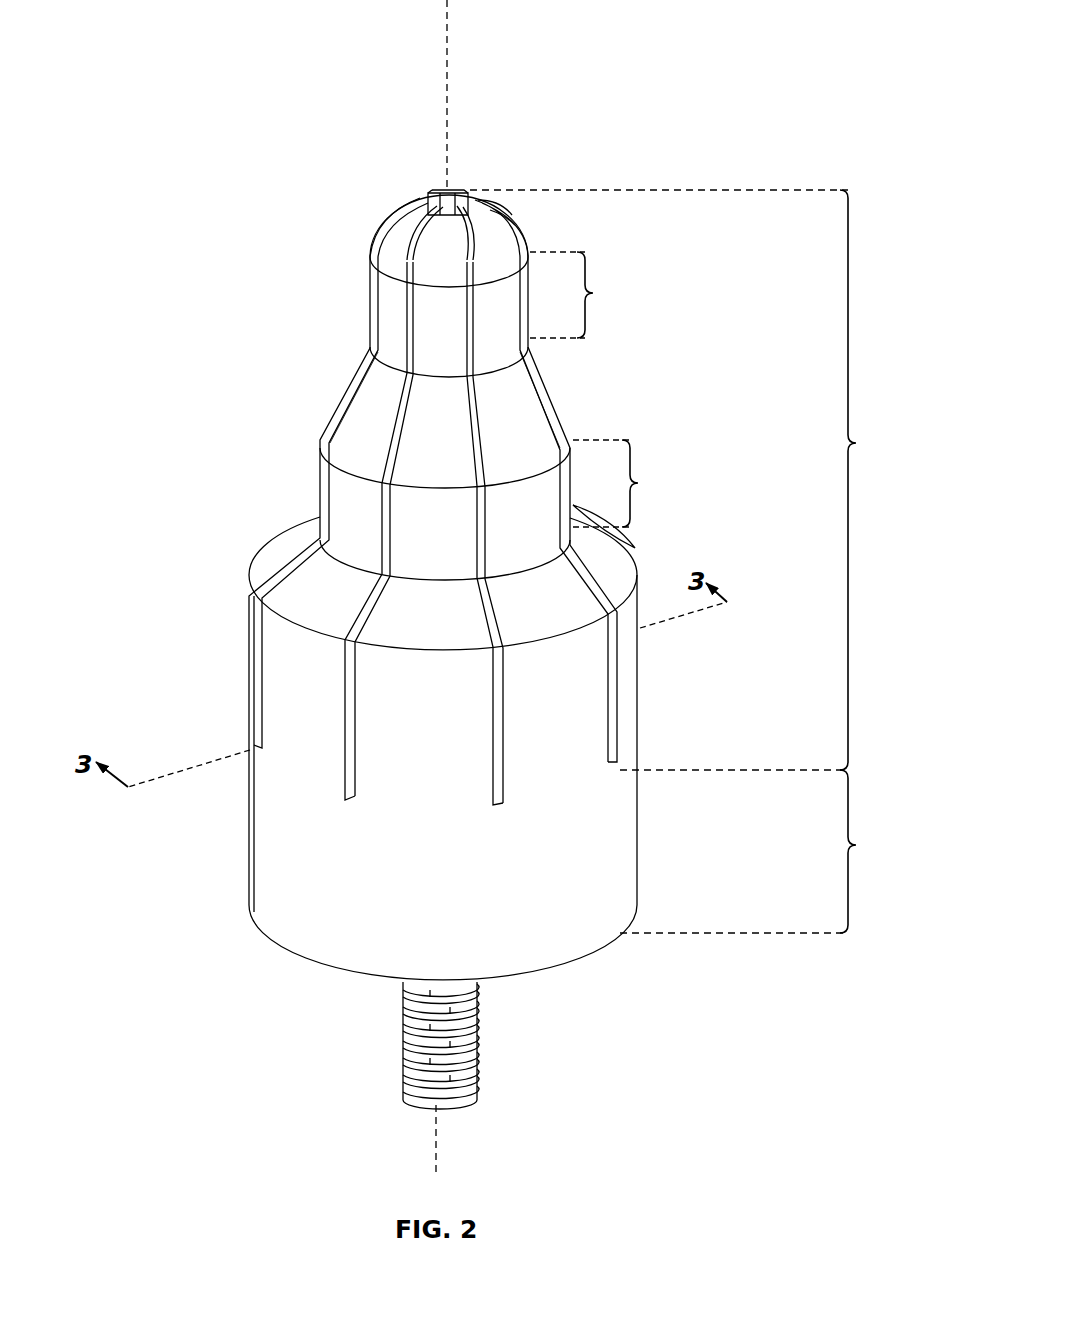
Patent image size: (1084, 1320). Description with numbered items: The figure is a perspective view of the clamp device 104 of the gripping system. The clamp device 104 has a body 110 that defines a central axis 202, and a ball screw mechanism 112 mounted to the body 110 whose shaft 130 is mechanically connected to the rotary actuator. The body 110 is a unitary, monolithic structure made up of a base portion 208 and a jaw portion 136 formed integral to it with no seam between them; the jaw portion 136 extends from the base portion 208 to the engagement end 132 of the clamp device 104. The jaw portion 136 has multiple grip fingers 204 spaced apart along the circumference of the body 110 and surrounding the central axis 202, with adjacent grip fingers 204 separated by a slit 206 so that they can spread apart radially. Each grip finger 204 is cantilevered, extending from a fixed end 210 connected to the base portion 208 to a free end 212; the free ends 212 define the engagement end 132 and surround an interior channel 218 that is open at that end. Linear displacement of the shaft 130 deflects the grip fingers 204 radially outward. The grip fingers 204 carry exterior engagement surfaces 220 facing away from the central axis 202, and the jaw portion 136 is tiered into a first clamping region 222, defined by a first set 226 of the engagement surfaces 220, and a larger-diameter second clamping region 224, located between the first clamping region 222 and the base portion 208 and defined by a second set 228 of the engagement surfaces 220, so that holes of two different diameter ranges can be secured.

The clamp device 104 is at (148, 292).
The body 110 is at (551, 742).
The ball screw mechanism 112 is at (406, 1045).
The shaft 130 is at (455, 1032).
The engagement end 132 is at (430, 176).
The jaw portion 136 is at (524, 482).
The central axis 202 is at (447, 28).
The grip fingers 204 is at (490, 246).
The slit 206 is at (478, 425).
The base portion 208 is at (771, 851).
The fixed end 210 is at (555, 712).
The free end 212 is at (482, 224).
The interior channel 218 is at (459, 200).
The engagement surfaces 220 is at (430, 315).
The first clamping region 222 is at (509, 314).
The second clamping region 224 is at (508, 510).
The first set of engagement surfaces 226 is at (352, 300).
The second set of engagement surfaces 228 is at (315, 465).